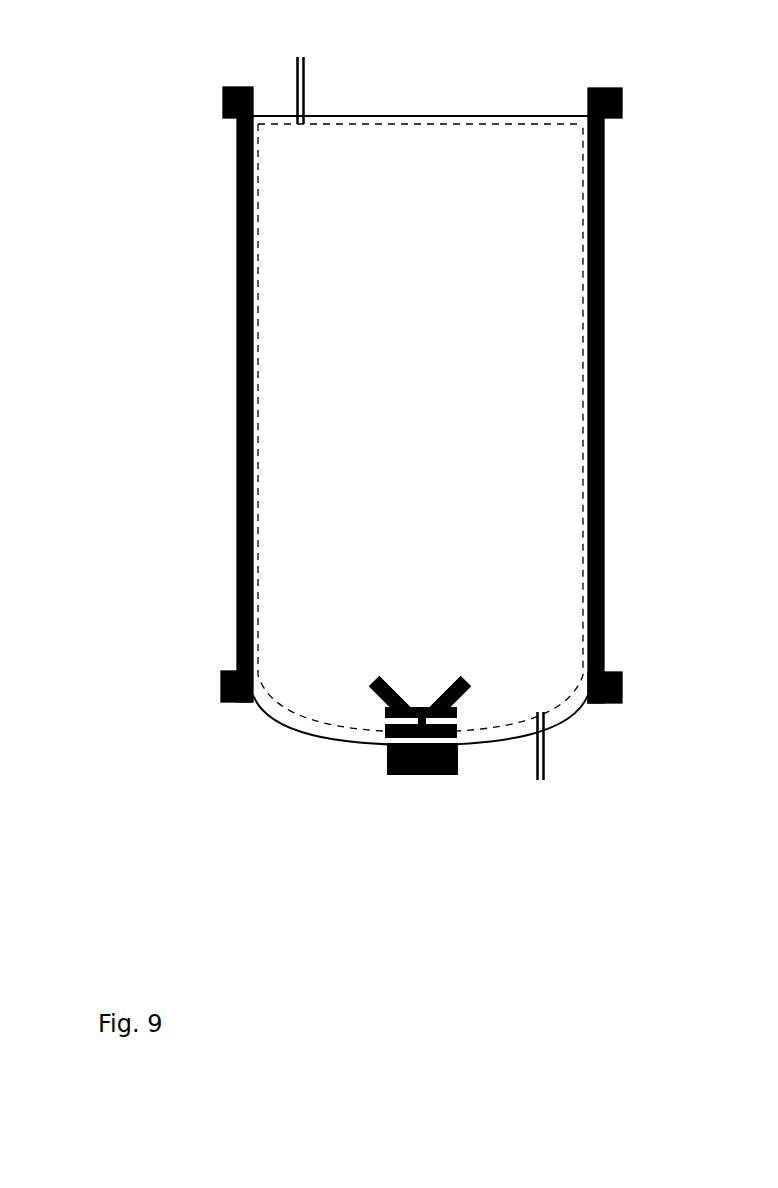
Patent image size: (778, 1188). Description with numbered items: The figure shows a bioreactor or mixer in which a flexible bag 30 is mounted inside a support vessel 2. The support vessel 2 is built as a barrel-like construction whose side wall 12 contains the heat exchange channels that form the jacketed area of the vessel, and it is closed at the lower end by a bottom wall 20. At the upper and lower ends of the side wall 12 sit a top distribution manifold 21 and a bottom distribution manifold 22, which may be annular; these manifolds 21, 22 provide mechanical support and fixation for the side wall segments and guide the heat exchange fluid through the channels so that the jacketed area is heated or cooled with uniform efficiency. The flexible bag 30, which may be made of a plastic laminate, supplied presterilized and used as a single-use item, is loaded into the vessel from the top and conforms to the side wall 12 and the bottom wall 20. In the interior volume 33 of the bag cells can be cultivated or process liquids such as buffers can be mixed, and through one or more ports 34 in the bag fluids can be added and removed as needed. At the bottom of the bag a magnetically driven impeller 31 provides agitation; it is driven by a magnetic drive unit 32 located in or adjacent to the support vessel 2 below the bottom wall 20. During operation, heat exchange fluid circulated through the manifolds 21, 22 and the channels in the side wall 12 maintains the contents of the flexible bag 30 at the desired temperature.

The support vessel 2 is at (158, 403).
The side wall 12 is at (236, 458).
The bottom wall 20 is at (313, 731).
The top distribution manifold 21 is at (237, 88).
The bottom distribution manifold 22 is at (222, 700).
The flexible bag 30 is at (503, 125).
The magnetically driven impeller 31 is at (410, 710).
The magnetic drive unit 32 is at (428, 777).
The interior volume of the bag 33 is at (420, 428).
The port 34 is at (306, 68).